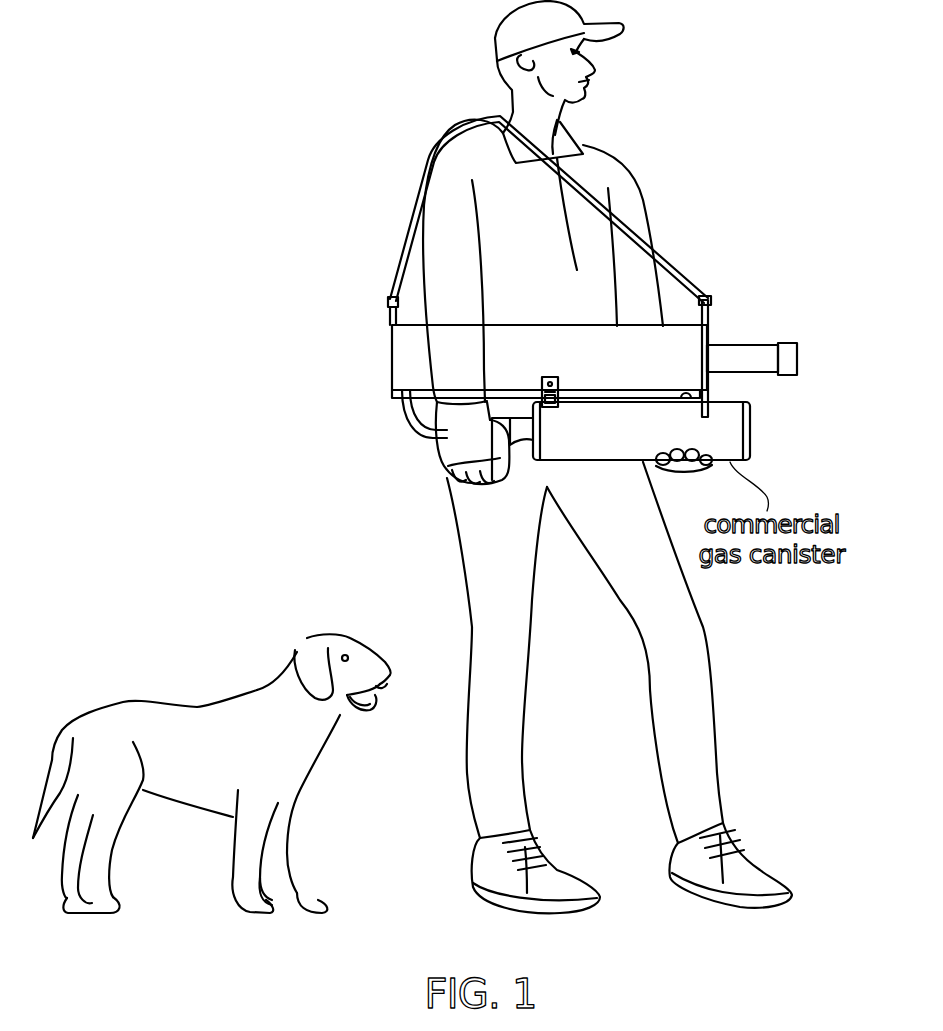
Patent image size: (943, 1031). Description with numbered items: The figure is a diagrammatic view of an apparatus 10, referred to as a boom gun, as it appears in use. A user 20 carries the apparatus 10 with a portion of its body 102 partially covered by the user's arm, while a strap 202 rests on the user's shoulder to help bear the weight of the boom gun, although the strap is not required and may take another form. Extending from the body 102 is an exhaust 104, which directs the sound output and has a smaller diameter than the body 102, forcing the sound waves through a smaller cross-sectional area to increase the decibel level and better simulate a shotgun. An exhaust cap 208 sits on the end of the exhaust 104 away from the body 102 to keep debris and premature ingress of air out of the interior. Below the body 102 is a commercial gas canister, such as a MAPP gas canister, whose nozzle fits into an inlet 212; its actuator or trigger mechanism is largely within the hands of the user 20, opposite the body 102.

The user 20 is at (456, 82).
The apparatus 10 is at (579, 312).
The strap 202 is at (397, 250).
The body 102 is at (680, 323).
The exhaust 104 is at (758, 343).
The exhaust cap 208 is at (798, 357).
The inlet 212 is at (400, 401).